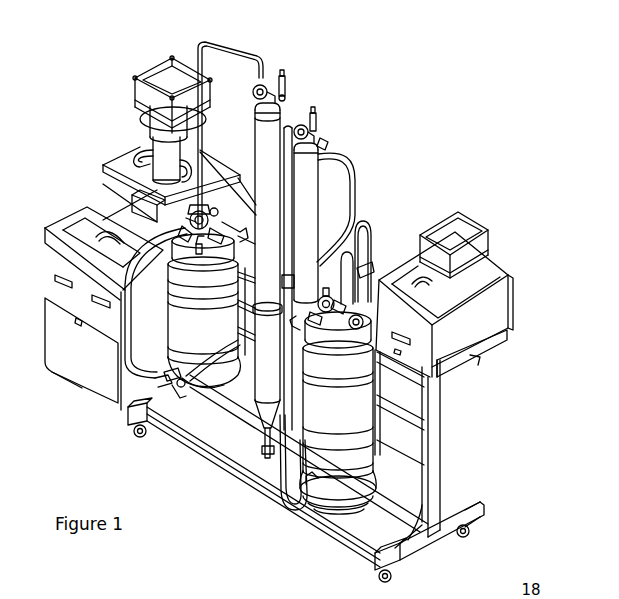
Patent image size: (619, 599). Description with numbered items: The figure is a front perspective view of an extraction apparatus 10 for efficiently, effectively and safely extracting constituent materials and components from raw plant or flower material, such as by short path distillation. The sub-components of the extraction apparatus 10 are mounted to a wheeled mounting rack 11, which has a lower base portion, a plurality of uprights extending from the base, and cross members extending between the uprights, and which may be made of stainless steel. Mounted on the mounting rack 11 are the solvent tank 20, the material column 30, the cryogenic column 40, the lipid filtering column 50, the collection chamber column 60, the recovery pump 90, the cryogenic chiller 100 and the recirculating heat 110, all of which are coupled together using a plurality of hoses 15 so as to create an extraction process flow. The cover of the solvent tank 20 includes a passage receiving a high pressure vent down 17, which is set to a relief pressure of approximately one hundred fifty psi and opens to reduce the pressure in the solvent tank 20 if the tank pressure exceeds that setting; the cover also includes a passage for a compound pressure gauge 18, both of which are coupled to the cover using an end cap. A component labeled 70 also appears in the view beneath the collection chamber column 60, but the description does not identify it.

The extraction apparatus 10 is at (419, 188).
The mounting rack 11 is at (433, 457).
The hoses 15 is at (248, 51).
The high pressure vent down 17 is at (214, 240).
The compound pressure gauge 18 is at (187, 217).
The solvent tank 20 is at (185, 334).
The material column 30 is at (263, 164).
The cryogenic column 40 is at (314, 204).
The lipid filtering column 50 is at (268, 428).
The collection chamber column 60 is at (333, 367).
The vessel base 70 is at (322, 503).
The recovery pump 90 is at (150, 68).
The cryogenic chiller 100 is at (72, 368).
The recirculating heat 110 is at (508, 268).